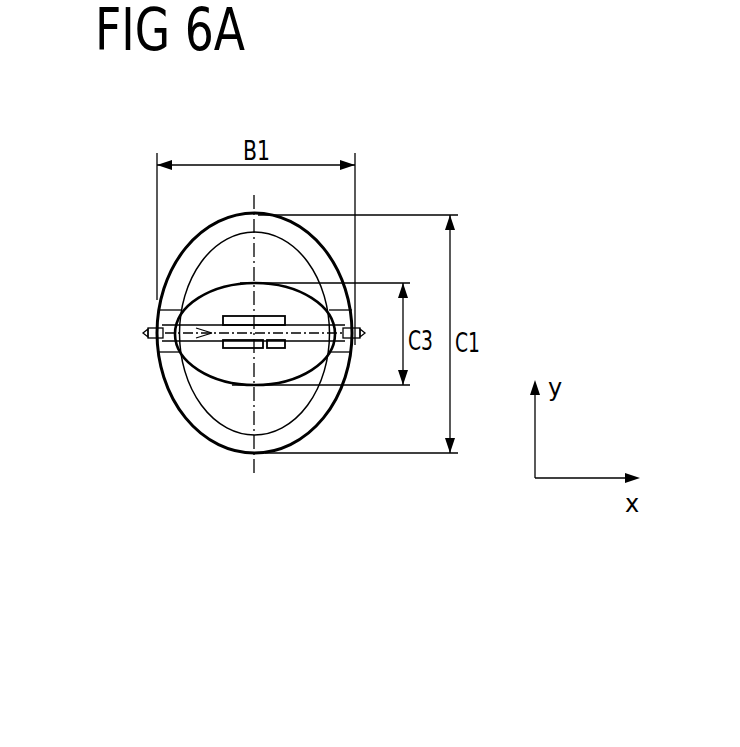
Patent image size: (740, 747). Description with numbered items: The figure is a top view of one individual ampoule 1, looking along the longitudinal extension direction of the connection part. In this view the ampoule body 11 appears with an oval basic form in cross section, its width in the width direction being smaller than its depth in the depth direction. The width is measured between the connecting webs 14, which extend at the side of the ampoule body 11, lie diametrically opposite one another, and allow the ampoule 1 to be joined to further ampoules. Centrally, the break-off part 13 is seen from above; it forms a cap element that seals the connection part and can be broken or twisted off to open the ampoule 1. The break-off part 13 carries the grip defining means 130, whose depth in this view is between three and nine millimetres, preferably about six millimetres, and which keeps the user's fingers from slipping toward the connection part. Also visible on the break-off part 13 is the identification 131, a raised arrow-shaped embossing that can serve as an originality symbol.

The ampoule 1 is at (144, 376).
The ampoule body 11 is at (323, 249).
The break-off part 13 is at (176, 340).
The connecting webs 14 is at (150, 330).
The grip defining means 130 is at (202, 355).
The identification 131 is at (257, 318).